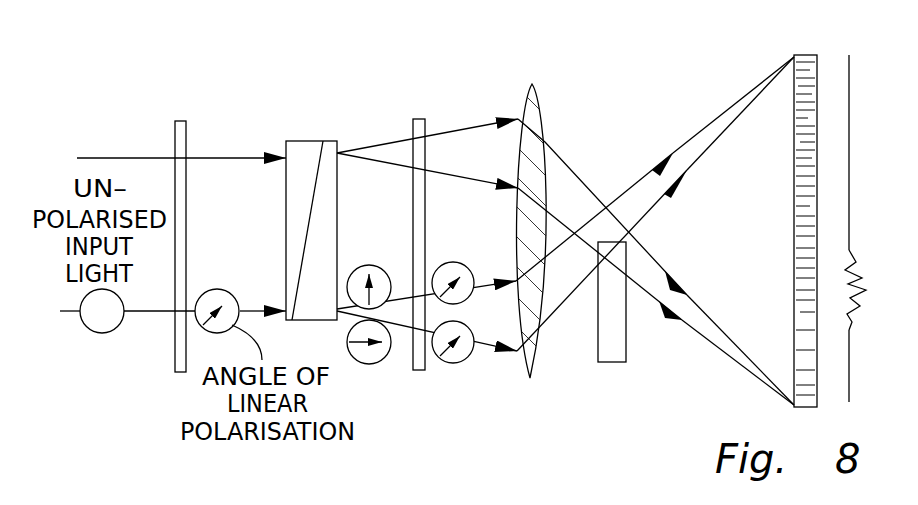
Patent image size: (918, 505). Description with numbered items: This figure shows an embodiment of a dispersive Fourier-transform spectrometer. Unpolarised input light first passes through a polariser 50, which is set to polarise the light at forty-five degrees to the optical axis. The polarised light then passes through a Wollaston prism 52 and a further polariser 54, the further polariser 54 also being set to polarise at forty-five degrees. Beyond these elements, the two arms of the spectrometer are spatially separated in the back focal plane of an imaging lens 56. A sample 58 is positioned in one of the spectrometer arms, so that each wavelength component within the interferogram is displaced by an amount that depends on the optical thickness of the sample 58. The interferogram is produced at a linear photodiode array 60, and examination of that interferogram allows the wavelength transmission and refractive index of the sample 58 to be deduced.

The polariser 50 is at (186, 135).
The Wollaston prism 52 is at (296, 141).
The further polariser 54 is at (418, 119).
The imaging lens 56 is at (525, 376).
The sample 58 is at (608, 362).
The linear photodiode array 60 is at (807, 55).